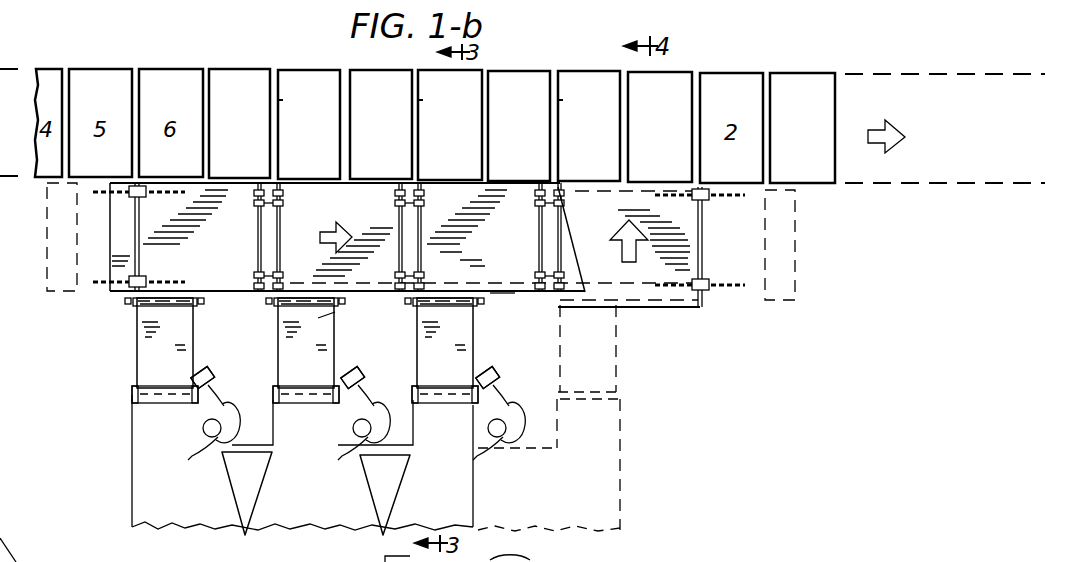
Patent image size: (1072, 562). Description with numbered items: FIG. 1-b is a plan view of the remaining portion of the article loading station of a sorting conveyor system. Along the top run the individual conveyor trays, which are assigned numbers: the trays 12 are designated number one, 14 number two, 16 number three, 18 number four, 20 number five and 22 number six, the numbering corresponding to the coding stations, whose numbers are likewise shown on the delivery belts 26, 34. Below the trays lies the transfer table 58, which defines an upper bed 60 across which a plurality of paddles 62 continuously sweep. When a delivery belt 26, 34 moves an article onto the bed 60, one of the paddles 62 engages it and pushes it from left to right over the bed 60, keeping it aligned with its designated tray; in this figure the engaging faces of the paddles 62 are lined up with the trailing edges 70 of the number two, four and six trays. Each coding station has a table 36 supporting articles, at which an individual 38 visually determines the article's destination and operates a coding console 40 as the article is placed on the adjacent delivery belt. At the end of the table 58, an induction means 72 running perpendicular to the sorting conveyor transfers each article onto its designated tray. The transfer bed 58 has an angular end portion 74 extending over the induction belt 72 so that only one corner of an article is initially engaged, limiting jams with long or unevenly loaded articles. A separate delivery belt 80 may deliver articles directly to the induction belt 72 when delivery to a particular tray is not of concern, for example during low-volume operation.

The tray 12 is at (236, 79).
The tray 14 is at (302, 75).
The tray 16 is at (376, 78).
The tray 18 is at (463, 82).
The tray 20 is at (533, 80).
The tray 22 is at (598, 78).
The delivery belt 26 is at (330, 318).
The delivery belt 34 is at (152, 368).
The table 36 is at (150, 478).
The individual 38 is at (232, 398).
The coding console 40 is at (205, 372).
The transfer table 58 is at (503, 296).
The upper bed 60 is at (224, 240).
The paddles 62 is at (282, 222).
The trailing edge 70 is at (280, 100).
The induction means 72 is at (672, 237).
The angular end portion 74 is at (572, 250).
The separate delivery belt 80 is at (608, 360).